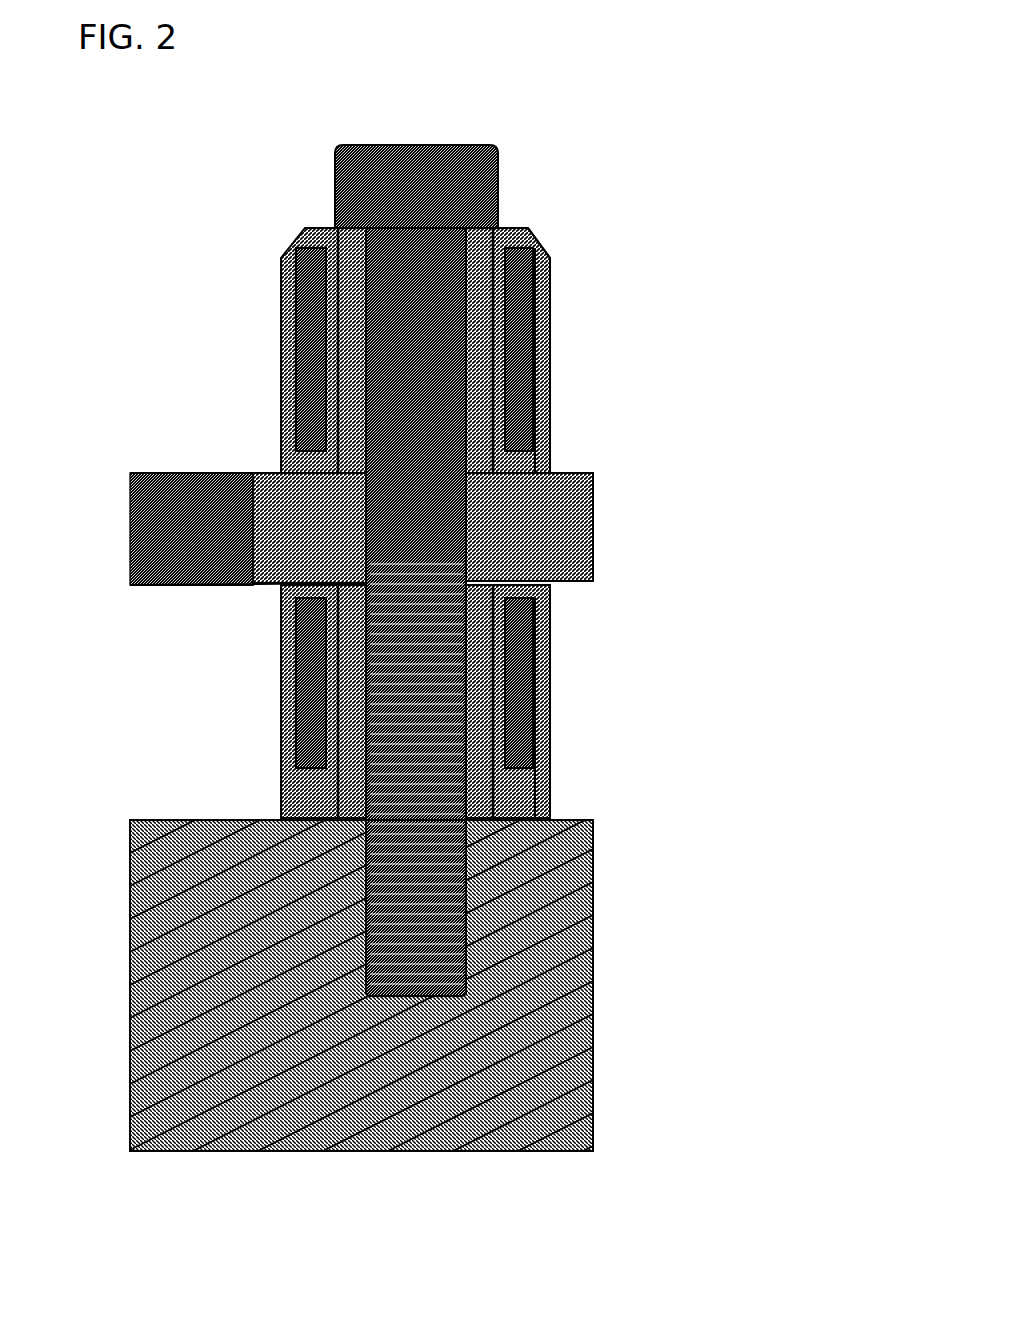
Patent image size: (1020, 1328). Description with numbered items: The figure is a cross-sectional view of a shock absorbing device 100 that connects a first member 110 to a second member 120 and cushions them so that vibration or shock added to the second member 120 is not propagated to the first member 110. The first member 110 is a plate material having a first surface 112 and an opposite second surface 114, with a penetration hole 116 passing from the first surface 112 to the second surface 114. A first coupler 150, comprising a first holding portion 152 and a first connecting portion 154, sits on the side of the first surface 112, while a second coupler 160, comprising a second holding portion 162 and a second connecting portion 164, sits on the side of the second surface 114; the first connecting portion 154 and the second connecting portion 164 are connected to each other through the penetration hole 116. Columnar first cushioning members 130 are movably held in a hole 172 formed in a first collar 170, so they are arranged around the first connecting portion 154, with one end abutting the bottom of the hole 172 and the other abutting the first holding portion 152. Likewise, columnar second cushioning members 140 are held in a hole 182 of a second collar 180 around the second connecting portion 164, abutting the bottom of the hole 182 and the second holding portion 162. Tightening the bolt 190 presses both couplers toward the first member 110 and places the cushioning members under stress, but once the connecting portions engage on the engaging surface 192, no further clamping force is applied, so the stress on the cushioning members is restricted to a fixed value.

The shock absorbing device 100 is at (460, 1215).
The first member 110 is at (573, 523).
The first surface 112 is at (564, 466).
The second surface 114 is at (566, 576).
The penetration hole 116 is at (354, 560).
The second member 120 is at (565, 920).
The first cushioning members 130 is at (512, 413).
The second cushioning members 140 is at (512, 655).
The first coupler 150 is at (700, 246).
The first holding portion 152 is at (530, 263).
The first connecting portion 154 is at (467, 348).
The second coupler 160 is at (700, 684).
The second holding portion 162 is at (533, 787).
The second connecting portion 164 is at (467, 705).
The first collar 170 is at (275, 318).
The hole 172 is at (303, 385).
The second collar 180 is at (277, 713).
The hole 182 is at (300, 670).
The bolt 190 is at (347, 176).
The engaging surface 192 is at (350, 518).